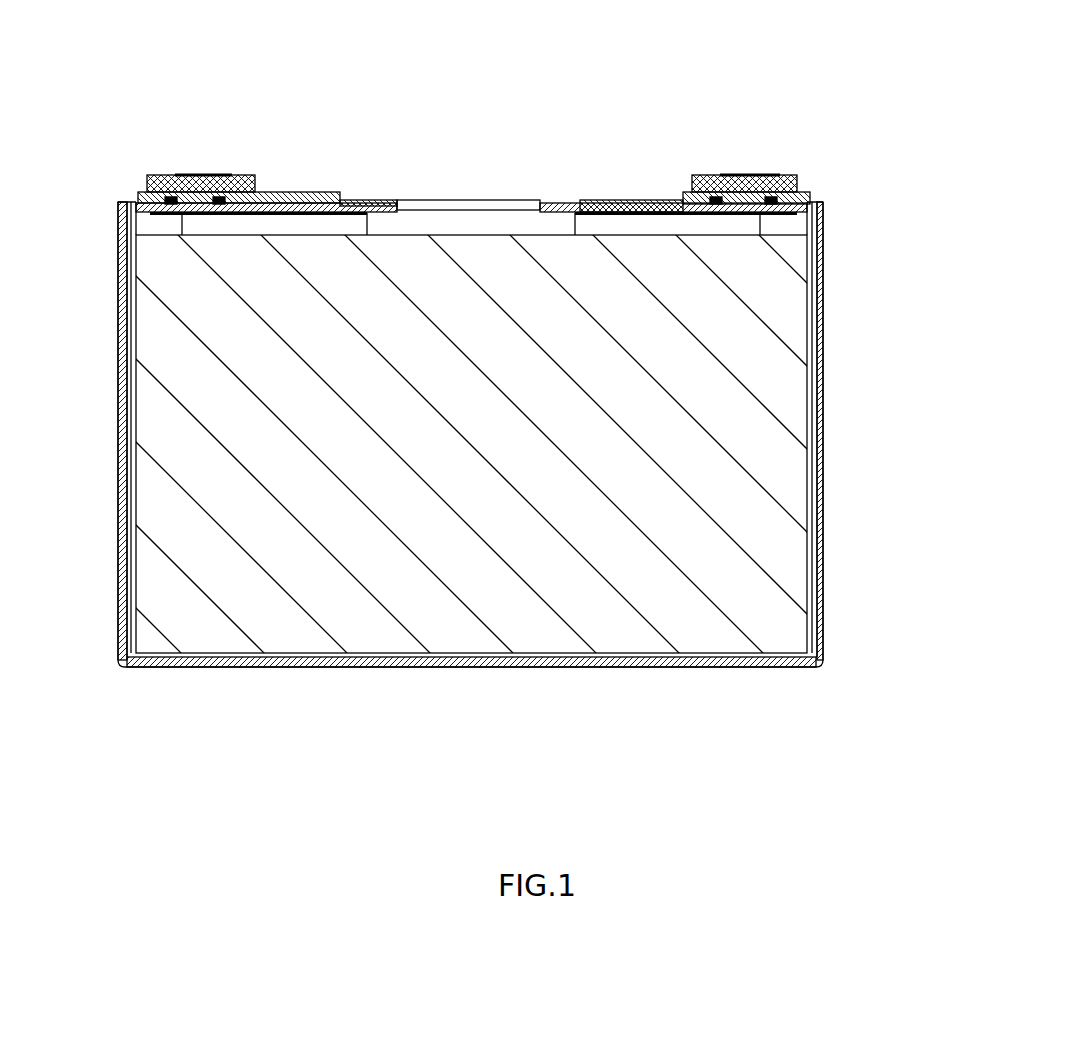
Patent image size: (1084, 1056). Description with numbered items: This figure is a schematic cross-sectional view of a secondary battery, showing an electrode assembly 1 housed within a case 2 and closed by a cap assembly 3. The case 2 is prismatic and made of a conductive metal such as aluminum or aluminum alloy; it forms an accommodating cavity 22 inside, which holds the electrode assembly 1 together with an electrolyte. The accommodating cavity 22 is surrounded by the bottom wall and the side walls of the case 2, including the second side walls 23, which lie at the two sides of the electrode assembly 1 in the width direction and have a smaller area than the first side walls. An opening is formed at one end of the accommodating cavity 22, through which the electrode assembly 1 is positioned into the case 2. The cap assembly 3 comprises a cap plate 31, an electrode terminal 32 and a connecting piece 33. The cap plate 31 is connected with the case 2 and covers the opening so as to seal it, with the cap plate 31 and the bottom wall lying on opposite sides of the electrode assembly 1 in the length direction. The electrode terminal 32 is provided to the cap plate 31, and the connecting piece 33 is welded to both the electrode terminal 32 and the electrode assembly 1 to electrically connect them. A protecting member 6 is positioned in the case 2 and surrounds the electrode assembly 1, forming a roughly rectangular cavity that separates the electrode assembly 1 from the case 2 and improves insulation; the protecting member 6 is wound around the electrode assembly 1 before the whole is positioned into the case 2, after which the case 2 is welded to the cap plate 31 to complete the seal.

The electrode assembly 1 is at (478, 622).
The case 2 is at (910, 251).
The cap assembly 3 is at (473, 144).
The protecting member 6 is at (823, 372).
The accommodating cavity 22 is at (814, 290).
The second side wall 23 is at (823, 338).
The cap plate 31 is at (378, 204).
The electrode terminal 32 is at (200, 175).
The connecting piece 33 is at (288, 200).